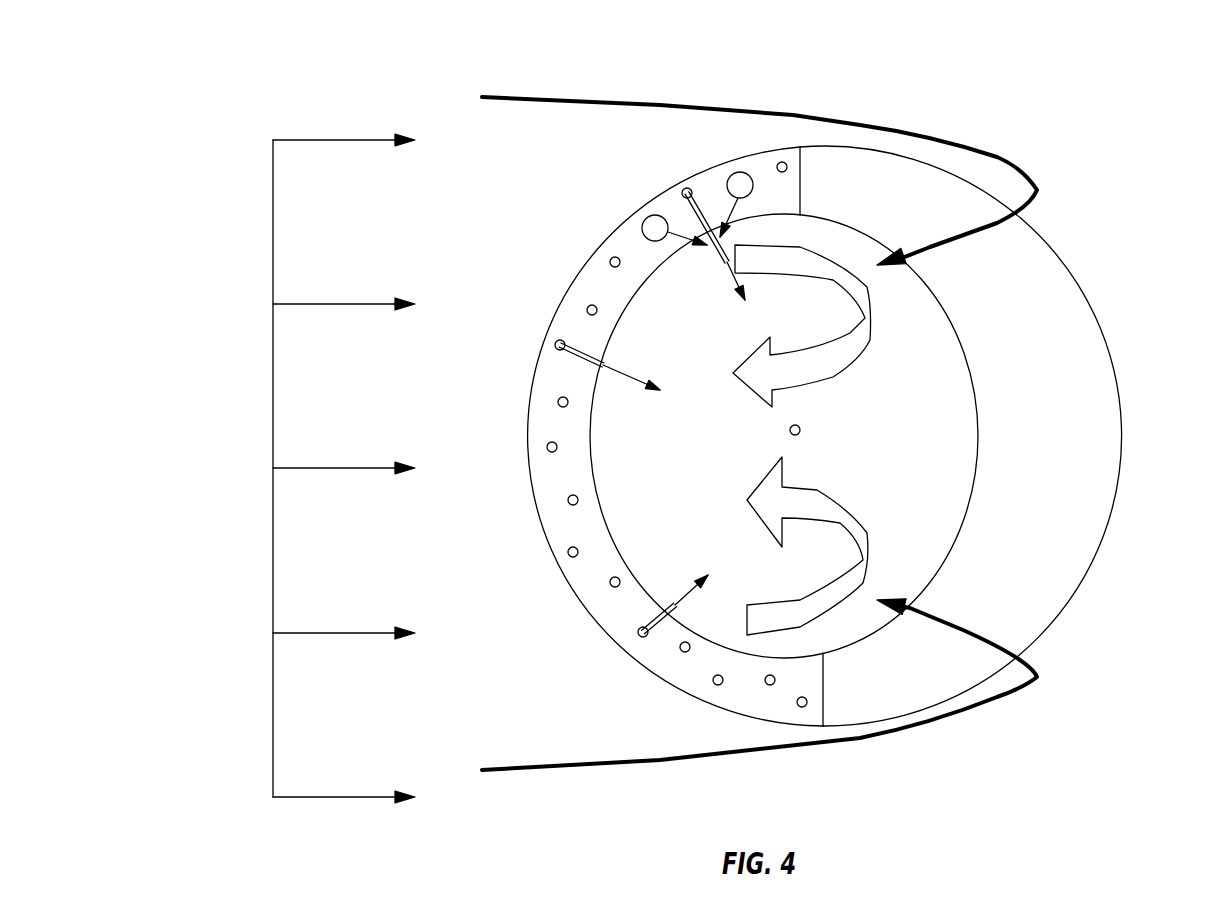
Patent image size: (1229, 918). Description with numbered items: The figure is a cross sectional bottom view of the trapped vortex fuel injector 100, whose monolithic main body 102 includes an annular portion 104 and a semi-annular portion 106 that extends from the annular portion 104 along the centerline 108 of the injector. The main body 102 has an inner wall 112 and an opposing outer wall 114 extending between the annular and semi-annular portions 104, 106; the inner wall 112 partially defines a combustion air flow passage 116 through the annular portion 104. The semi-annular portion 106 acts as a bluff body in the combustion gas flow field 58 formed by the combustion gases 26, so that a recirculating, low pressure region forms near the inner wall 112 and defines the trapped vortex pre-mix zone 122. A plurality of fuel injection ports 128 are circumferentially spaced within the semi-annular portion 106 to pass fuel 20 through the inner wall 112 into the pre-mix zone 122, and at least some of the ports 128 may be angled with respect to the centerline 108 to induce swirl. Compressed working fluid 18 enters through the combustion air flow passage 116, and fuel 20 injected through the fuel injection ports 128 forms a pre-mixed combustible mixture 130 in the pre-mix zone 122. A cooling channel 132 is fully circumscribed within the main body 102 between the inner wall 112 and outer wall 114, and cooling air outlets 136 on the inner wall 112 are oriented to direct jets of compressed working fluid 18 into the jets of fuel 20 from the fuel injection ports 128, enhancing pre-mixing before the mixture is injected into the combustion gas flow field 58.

The combustion gases 26 is at (312, 140).
The combustion gas flow field 58 is at (273, 437).
The trapped vortex fuel injector 100 is at (1110, 152).
The main body 102 is at (1093, 304).
The annular portion 104 is at (1097, 438).
The semi-annular portion 106 is at (753, 698).
The centerline 108 is at (797, 424).
The inner wall 112 is at (593, 473).
The outer wall 114 is at (563, 567).
The combustion air flow passage 116 is at (899, 553).
The trapped vortex pre-mix zone 122 is at (846, 458).
The fuel injection ports 128 is at (682, 188).
The pre-mixed combustible mixture 130 is at (872, 302).
The cooling channel 132 is at (737, 172).
The compressed working fluid 18 is at (684, 230).
The fuel 20 is at (728, 268).
The cooling air outlets 136 is at (788, 202).